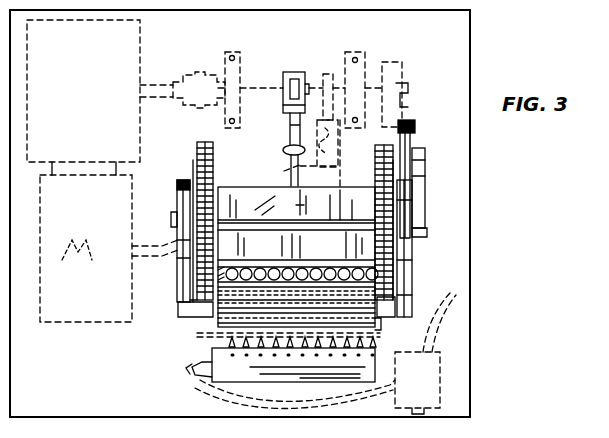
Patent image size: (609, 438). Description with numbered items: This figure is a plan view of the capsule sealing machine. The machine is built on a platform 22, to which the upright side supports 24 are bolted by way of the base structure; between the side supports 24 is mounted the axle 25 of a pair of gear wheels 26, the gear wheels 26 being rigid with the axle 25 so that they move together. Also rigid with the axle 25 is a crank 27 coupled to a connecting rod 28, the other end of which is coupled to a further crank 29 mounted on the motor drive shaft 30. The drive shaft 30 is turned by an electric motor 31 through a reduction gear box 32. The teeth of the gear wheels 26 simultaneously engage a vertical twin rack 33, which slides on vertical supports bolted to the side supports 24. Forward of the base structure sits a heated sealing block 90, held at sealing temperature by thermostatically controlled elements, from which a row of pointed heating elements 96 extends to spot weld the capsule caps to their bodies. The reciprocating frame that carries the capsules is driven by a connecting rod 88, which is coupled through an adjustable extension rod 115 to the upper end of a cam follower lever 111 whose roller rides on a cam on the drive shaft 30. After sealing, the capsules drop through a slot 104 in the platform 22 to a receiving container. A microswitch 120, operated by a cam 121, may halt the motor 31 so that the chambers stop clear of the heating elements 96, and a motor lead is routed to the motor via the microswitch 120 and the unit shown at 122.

The platform 22 is at (122, 375).
The upright side supports 24 is at (178, 272).
The axle 25 is at (322, 224).
The gear wheels 26 is at (196, 146).
The crank 27 is at (412, 198).
The connecting rod 28 is at (415, 130).
The crank 29 is at (398, 62).
The motor drive shaft 30 is at (255, 90).
The electric motor 31 is at (90, 322).
The reduction gear box 32 is at (94, 159).
The vertical twin rack 33 is at (178, 304).
The connecting rod 88 is at (291, 162).
The heated sealing block 90 is at (280, 365).
The pointed heating elements 96 is at (201, 338).
The slot 104 is at (370, 327).
The cam follower lever 111 is at (297, 67).
The adjustable extension rod 115 is at (290, 131).
The microswitch 120 is at (338, 150).
The cam 121 is at (328, 74).
The control unit 122 is at (432, 394).